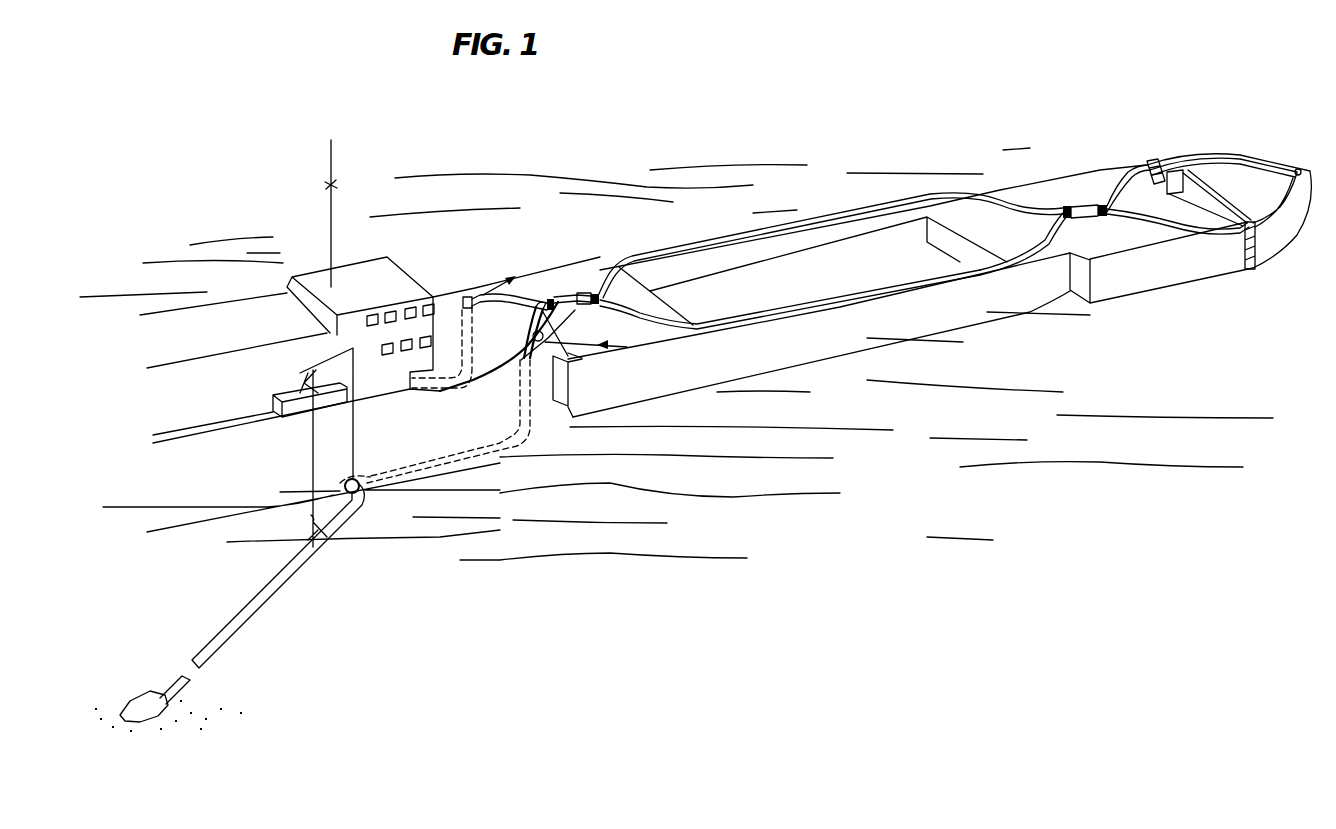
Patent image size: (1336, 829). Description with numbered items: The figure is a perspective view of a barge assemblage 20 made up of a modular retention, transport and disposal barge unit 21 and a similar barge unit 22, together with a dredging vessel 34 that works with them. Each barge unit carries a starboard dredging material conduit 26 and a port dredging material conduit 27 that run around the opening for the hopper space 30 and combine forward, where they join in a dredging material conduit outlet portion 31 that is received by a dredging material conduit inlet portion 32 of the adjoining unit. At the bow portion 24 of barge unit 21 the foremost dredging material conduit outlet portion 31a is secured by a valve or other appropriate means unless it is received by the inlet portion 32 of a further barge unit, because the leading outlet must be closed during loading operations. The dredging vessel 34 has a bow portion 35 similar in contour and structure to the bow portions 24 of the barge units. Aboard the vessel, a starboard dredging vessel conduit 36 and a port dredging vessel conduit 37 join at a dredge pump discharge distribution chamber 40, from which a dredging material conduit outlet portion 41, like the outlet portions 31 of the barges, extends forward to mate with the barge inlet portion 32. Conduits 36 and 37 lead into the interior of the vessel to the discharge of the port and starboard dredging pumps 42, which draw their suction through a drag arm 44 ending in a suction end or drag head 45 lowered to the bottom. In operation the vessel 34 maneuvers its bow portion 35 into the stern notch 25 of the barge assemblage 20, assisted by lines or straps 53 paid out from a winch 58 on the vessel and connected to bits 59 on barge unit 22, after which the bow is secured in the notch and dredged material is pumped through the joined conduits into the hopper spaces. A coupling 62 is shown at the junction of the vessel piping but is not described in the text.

The barge assemblage 20 is at (939, 265).
The barge unit 21 is at (1168, 270).
The barge unit 22 is at (751, 365).
The bow portion 24 is at (1040, 220).
The stern notch 25 is at (580, 310).
The starboard dredging material conduit 26 is at (970, 262).
The port dredging material conduit 27 is at (806, 231).
The hopper space 30 is at (862, 293).
The dredging material conduit outlet portion 31 is at (1088, 217).
The dredging material conduit outlet portion 31a is at (1294, 169).
The dredging material conduit inlet portion 32 is at (592, 292).
The dredging vessel 34 is at (451, 290).
The bow portion 35 is at (523, 294).
The dredging vessel conduit 36 is at (522, 350).
The dredging vessel conduit 37 is at (480, 302).
The dredge pump discharge distribution chamber 40 is at (572, 353).
The dredging material conduit outlet portion 41 is at (568, 293).
The dredging pump 42 is at (362, 470).
The drag arm 44 is at (308, 557).
The drag head 45 is at (143, 706).
The line or strap 53 is at (552, 364).
The winch 58 is at (533, 316).
The bit 59 is at (628, 348).
The coupling 62 is at (553, 296).